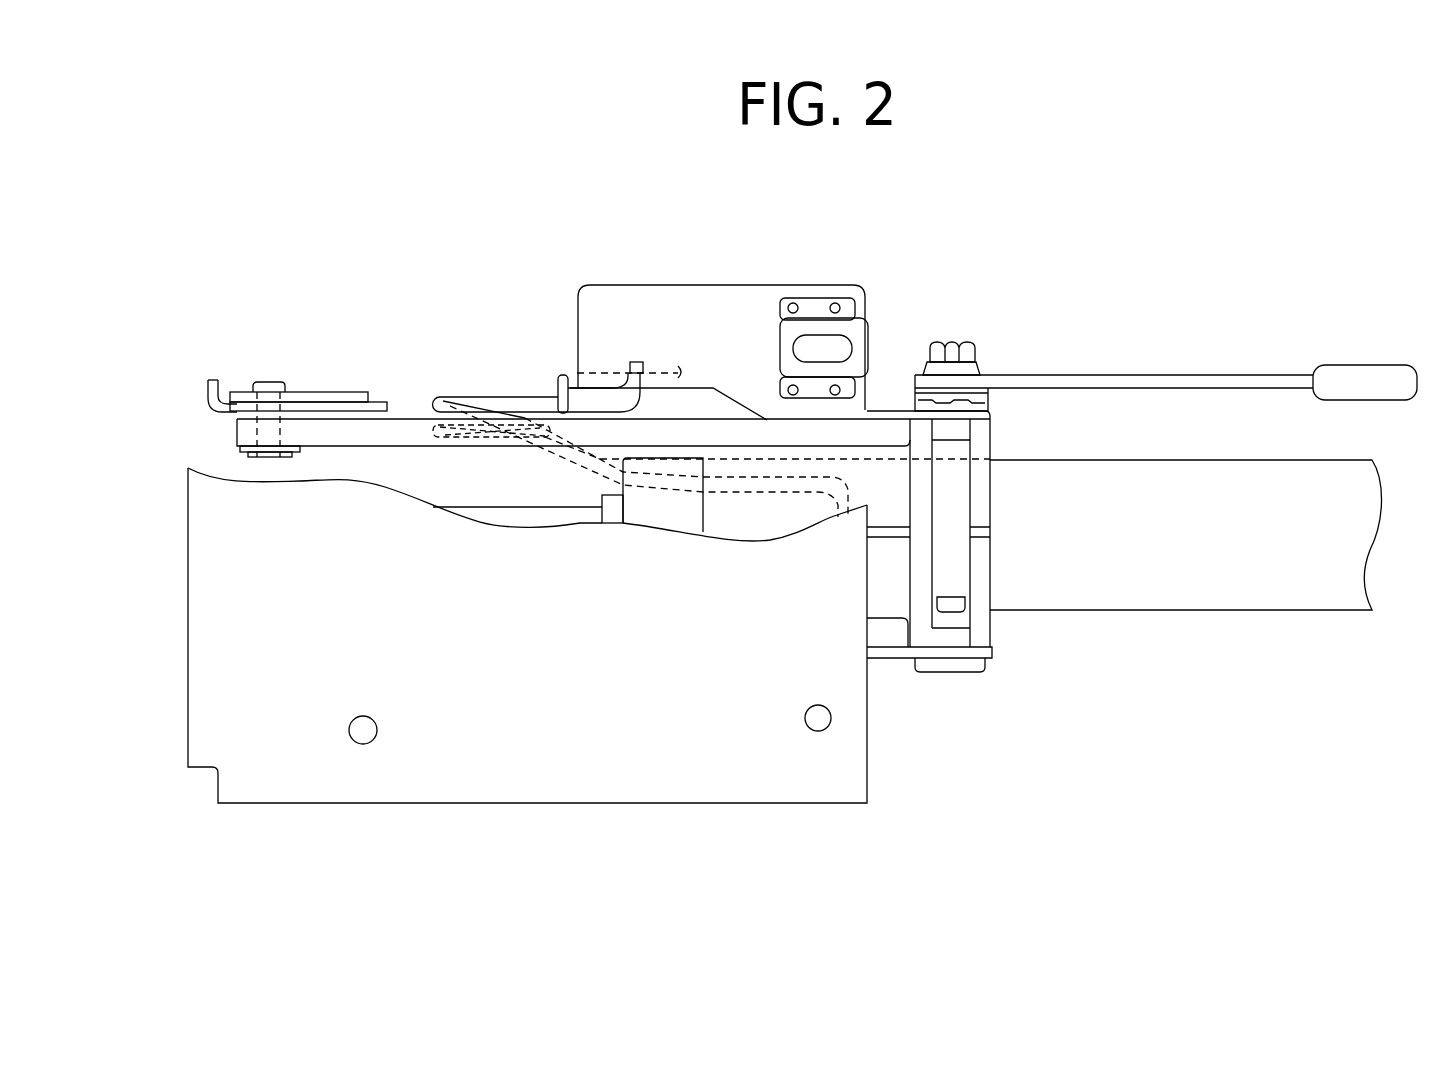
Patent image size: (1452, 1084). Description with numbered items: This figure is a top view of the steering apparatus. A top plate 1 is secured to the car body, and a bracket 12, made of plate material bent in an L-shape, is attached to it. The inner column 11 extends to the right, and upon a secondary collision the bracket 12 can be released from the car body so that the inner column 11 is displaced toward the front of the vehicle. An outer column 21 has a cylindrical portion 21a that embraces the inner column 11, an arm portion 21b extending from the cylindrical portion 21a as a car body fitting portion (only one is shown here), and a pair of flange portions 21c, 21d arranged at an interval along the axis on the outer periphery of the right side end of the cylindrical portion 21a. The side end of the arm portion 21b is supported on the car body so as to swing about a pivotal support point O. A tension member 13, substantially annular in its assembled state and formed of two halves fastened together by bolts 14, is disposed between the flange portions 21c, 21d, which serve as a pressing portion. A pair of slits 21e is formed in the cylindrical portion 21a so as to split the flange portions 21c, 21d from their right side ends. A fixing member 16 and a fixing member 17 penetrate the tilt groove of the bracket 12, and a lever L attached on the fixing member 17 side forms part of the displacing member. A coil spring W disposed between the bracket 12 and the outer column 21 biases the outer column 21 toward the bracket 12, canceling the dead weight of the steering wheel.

The top plate 1 is at (695, 788).
The inner column 11 is at (1203, 587).
The bracket 12 is at (893, 408).
The tension member 13 is at (953, 493).
The bolt 14 is at (955, 607).
The fixing member 16 is at (958, 665).
The fixing member 17 is at (948, 340).
The outer column 21 is at (990, 441).
The cylindrical portion 21a is at (837, 472).
The arm portion 21b is at (412, 425).
The flange portion 21c is at (916, 637).
The flange portion 21d is at (978, 637).
The slit 21e is at (990, 537).
The lever L is at (1133, 380).
The pivotal support point O is at (263, 457).
The coil spring W is at (508, 397).